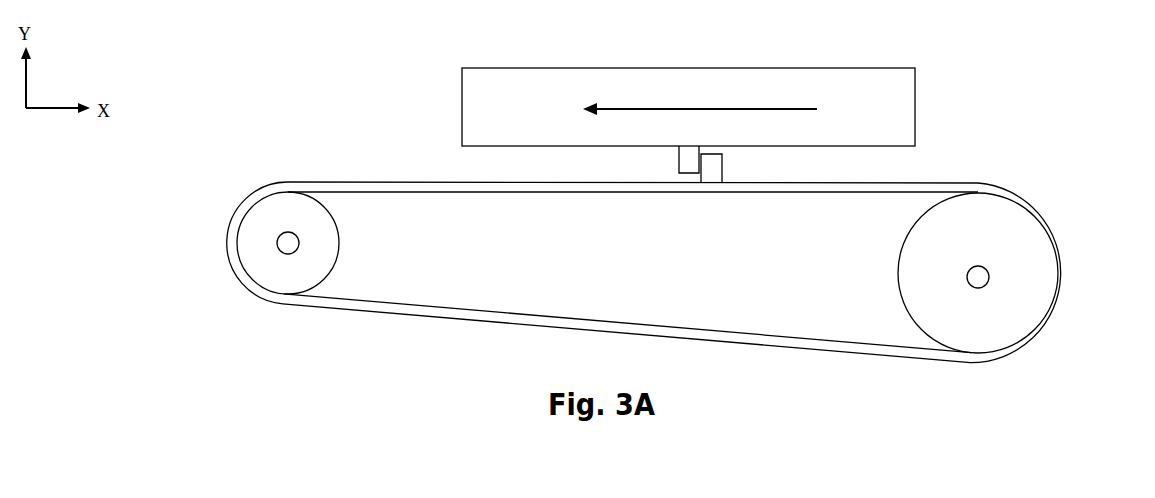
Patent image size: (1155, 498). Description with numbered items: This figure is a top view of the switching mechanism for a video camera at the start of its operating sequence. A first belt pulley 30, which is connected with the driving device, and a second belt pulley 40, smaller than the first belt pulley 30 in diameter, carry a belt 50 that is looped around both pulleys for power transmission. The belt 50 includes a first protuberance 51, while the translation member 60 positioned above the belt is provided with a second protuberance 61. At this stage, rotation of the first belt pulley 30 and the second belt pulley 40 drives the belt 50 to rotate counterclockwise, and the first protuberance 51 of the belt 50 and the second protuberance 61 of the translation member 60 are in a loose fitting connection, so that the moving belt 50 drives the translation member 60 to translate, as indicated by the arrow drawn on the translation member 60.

The first belt pulley 30 is at (1033, 290).
The second belt pulley 40 is at (276, 265).
The belt 50 is at (240, 203).
The first protuberance 51 is at (722, 168).
The translation member 60 is at (915, 114).
The second protuberance 61 is at (675, 163).